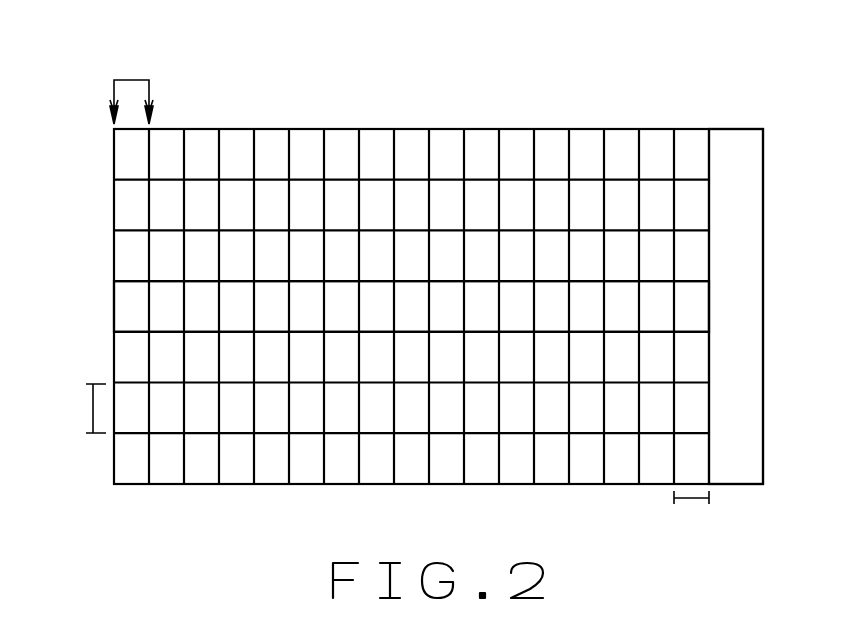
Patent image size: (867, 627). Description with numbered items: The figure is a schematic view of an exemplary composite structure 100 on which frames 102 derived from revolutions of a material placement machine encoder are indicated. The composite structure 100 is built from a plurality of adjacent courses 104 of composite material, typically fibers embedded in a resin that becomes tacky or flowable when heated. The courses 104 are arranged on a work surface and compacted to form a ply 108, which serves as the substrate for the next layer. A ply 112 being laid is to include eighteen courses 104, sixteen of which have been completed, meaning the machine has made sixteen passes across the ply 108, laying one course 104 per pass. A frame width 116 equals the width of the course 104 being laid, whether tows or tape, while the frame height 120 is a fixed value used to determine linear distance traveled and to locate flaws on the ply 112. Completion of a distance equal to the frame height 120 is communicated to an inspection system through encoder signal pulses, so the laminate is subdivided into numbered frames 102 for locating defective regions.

The composite structure 100 is at (389, 77).
The frames 102 is at (622, 142).
The courses 104 is at (131, 80).
The ply 108 is at (763, 278).
The ply being laid 112 is at (114, 313).
The frame width 116 is at (690, 498).
The frame height 120 is at (93, 408).